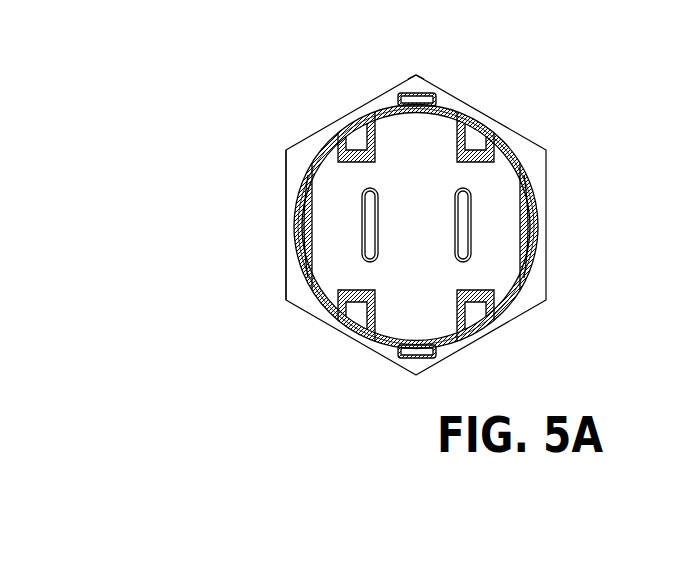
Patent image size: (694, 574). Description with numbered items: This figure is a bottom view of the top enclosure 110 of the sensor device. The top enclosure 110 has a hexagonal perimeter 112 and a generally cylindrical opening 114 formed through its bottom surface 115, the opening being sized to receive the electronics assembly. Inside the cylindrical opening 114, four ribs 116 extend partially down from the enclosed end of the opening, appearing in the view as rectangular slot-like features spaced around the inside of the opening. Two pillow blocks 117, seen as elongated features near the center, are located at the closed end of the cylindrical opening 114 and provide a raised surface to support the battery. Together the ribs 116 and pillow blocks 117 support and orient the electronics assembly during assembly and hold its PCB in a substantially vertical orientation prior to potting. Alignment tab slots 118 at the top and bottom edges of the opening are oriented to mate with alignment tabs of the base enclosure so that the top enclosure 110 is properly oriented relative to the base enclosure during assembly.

The top enclosure 110 is at (398, 71).
The hexagonal perimeter 112 is at (535, 133).
The cylindrical opening 114 is at (518, 312).
The bottom surface 115 is at (288, 152).
The ribs 116 is at (355, 130).
The pillow blocks 117 is at (363, 216).
The alignment tab slots 118 is at (393, 362).